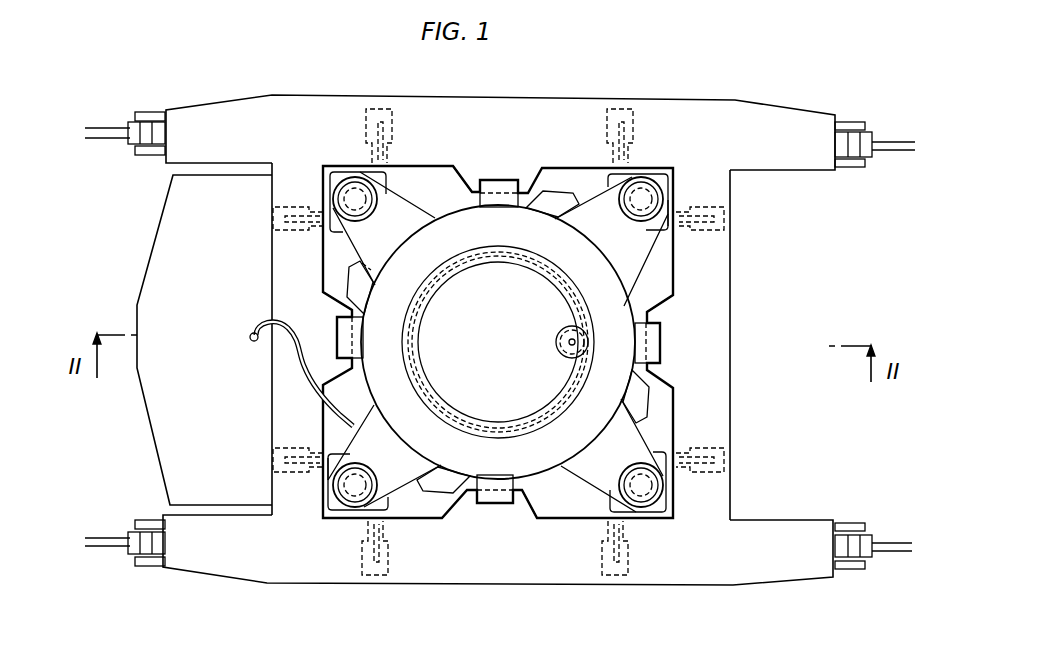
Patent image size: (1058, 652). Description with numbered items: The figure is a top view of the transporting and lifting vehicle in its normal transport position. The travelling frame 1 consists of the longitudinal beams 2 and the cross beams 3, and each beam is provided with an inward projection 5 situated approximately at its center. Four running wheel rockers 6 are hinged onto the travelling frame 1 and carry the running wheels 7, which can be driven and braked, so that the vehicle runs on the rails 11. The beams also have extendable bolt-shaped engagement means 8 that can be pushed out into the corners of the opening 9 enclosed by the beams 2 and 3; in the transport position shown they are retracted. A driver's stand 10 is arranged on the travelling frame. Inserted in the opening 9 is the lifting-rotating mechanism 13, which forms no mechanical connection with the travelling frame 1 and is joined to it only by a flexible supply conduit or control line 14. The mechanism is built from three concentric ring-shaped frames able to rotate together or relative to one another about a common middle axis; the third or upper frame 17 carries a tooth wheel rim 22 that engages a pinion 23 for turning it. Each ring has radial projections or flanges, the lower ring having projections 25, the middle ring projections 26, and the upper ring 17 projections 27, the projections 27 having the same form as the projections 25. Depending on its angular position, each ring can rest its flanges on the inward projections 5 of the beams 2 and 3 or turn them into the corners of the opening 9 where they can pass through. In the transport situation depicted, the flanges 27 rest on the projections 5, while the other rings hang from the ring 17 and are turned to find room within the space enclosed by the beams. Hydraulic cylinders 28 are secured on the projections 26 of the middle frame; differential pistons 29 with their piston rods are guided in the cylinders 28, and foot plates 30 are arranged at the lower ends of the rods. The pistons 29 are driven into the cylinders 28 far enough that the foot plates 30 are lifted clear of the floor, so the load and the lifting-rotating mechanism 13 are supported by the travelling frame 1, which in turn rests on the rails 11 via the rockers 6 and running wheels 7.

The travelling frame 1 is at (738, 101).
The longitudinal beams 2 is at (557, 132).
The cross beams 3 is at (297, 413).
The inward projections 5 is at (525, 190).
The running wheel rockers 6 is at (150, 113).
The running wheels 7 is at (132, 124).
The bolt-shaped engagement means 8 is at (378, 108).
The opening 9 is at (425, 185).
The driver's stand 10 is at (168, 350).
The rails 11 is at (102, 128).
The lifting-rotating mechanism 13 is at (553, 331).
The flexible supply conduit or control line 14 is at (252, 333).
The third or upper frame 17 is at (600, 296).
The tooth wheel rim 22 is at (560, 402).
The pinion 23 is at (562, 352).
The projections 25 is at (361, 286).
The projections 26 is at (375, 248).
The projections 27 is at (497, 182).
The hydraulic cylinders 28 is at (353, 185).
The differential pistons 29 is at (648, 172).
The foot plates 30 is at (667, 215).